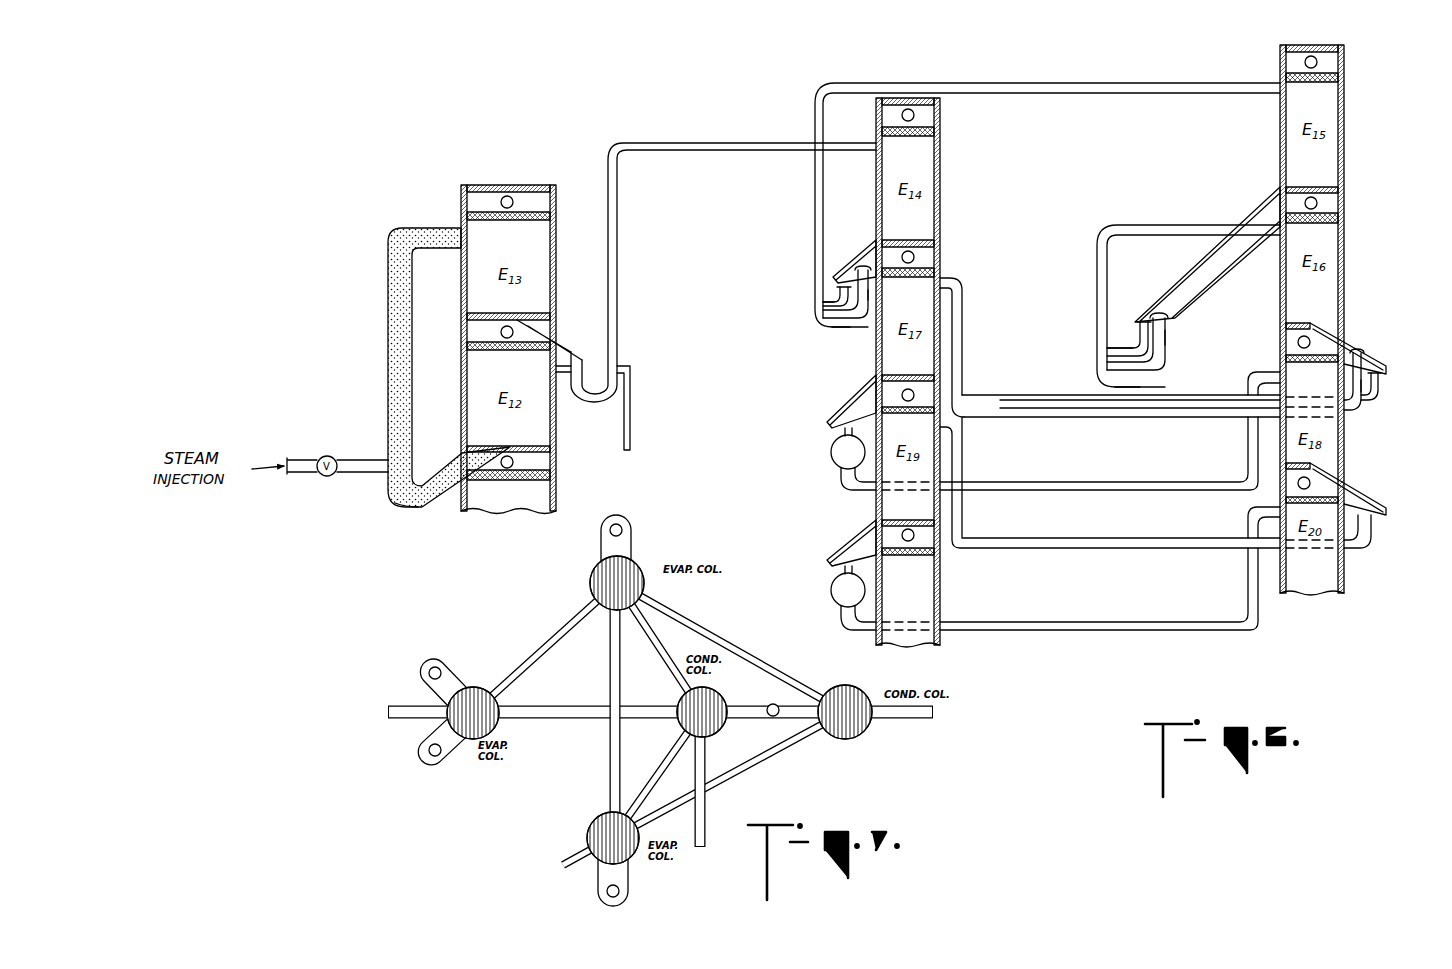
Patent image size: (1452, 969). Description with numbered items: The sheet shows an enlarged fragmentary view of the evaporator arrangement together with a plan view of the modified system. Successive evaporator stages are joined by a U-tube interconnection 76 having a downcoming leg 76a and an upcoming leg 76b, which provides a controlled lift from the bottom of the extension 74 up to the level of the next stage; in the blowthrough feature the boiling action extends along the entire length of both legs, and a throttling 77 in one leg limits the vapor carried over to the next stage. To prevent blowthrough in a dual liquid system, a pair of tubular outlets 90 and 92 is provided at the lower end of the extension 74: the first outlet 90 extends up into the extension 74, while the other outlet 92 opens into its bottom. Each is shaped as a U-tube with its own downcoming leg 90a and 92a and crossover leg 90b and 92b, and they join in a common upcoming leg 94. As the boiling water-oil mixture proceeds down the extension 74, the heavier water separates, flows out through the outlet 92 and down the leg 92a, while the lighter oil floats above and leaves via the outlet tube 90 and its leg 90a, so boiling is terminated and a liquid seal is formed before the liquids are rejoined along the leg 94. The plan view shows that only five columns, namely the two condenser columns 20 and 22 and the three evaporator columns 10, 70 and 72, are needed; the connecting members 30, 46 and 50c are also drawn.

In FIG. 6, the evaporator column 10 is at (542, 178).
In FIG. 7, the evaporator column 10 is at (585, 578).
In FIG. 7, the condenser column 20 is at (745, 688).
In FIG. 7, the condenser column 22 is at (843, 677).
In FIG. 7, the horizontal connecting conduit 30 is at (566, 705).
In FIG. 7, the connecting conduit 46 is at (897, 715).
In FIG. 7, the connecting conduit 50c is at (790, 716).
In FIG. 6, the evaporator column 70 is at (1364, 174).
In FIG. 6, the evaporator column 72 is at (954, 186).
In FIG. 7, the evaporator column 72 is at (598, 818).
In FIG. 6, the extension 74 is at (862, 250).
In FIG. 7, the extension 74 is at (630, 545).
In FIG. 7, the U-tube interconnection 76 is at (608, 773).
In FIG. 6, the downcoming leg 76a is at (422, 509).
In FIG. 6, the upcoming leg 76b is at (388, 346).
In FIG. 6, the throttling 77 is at (830, 454).
In FIG. 6, the tubular outlet 90 is at (870, 294).
In FIG. 6, the downcoming leg 90a is at (870, 313).
In FIG. 6, the crossover leg 90b is at (836, 328).
In FIG. 6, the tubular outlet 92 is at (836, 299).
In FIG. 6, the downcoming leg 92a is at (836, 287).
In FIG. 6, the crossover leg 92b is at (826, 320).
In FIG. 6, the common upcoming leg 94 is at (813, 222).